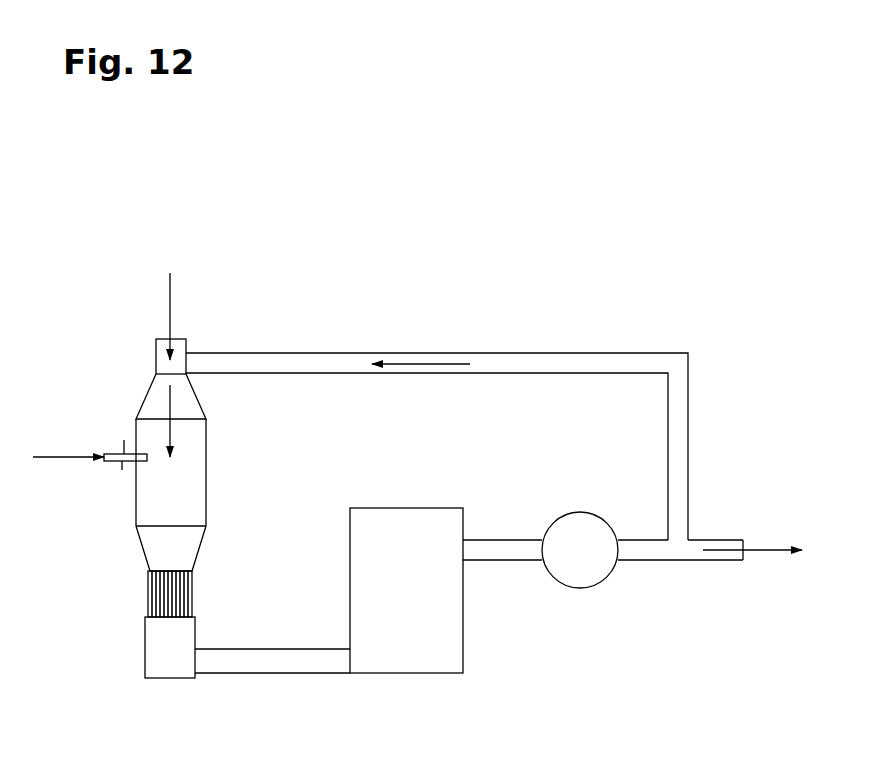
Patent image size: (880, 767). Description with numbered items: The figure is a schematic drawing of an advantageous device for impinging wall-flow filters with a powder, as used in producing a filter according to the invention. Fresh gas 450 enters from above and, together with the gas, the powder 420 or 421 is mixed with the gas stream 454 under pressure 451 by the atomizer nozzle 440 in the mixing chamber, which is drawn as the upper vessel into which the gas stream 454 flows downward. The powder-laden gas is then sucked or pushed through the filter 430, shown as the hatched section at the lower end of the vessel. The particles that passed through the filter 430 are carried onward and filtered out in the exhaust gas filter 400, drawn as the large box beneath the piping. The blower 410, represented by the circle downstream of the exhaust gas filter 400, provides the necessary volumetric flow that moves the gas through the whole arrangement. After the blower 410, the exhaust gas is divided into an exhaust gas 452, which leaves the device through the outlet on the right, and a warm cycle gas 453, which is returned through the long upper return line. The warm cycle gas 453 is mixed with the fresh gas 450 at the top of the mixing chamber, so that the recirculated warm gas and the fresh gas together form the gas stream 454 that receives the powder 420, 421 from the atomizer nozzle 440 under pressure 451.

The exhaust gas filter 400 is at (407, 508).
The blower 410 is at (580, 512).
The powder 420 is at (110, 452).
The powder 421 is at (124, 450).
The filter 430 is at (193, 593).
The atomizer nozzle 440 is at (122, 461).
The fresh gas 450 is at (172, 290).
The pressure 451 is at (53, 460).
The exhaust gas 452 is at (755, 550).
The warm cycle gas 453 is at (428, 362).
The gas stream 454 is at (172, 432).